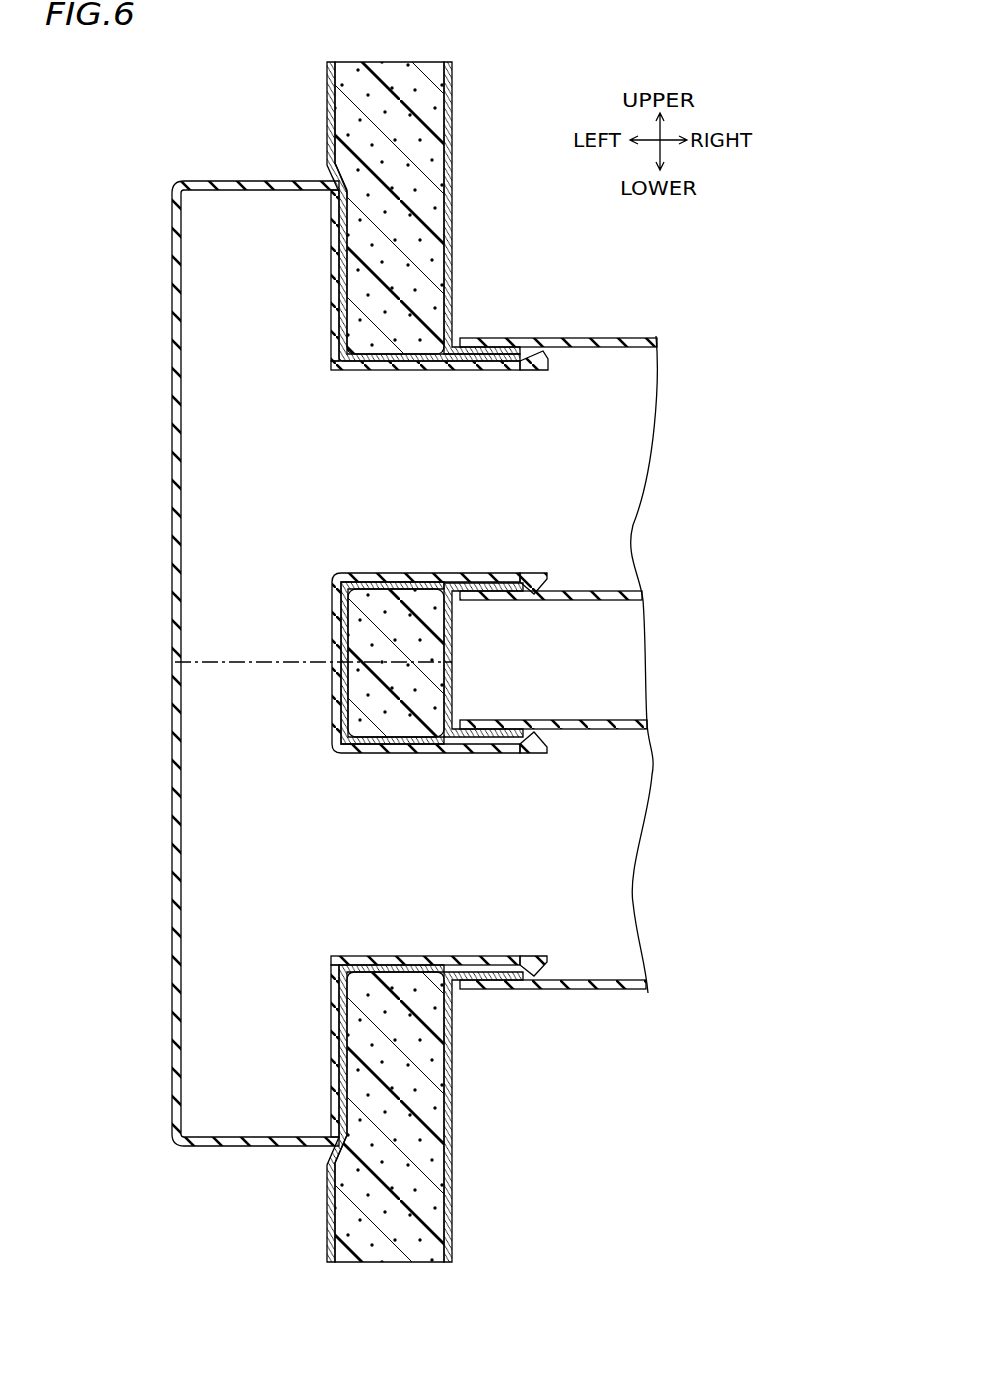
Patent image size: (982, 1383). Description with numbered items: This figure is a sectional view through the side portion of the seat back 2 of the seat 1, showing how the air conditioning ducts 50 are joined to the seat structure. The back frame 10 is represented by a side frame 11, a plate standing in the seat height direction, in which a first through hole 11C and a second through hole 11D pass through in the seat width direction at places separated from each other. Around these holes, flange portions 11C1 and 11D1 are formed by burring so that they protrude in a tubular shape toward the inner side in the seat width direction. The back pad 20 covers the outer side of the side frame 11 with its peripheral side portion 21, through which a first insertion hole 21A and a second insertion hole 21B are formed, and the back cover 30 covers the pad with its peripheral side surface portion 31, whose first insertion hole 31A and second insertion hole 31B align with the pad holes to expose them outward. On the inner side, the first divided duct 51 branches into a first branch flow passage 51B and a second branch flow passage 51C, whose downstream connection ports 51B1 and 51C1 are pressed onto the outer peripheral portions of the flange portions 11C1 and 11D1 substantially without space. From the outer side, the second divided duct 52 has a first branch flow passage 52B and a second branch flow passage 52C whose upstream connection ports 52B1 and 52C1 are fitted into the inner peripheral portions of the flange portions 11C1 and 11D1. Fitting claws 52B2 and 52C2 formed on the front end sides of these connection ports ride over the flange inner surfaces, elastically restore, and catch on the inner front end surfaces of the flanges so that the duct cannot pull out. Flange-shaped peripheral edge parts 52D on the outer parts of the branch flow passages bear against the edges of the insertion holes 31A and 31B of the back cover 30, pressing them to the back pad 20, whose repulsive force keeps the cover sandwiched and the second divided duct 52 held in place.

The seat 1 is at (378, 660).
The seat back 2 is at (145, 151).
The back frame 10 is at (495, 660).
The side frame 11 is at (464, 96).
The first through hole 11C is at (482, 472).
The flange portion 11C1 is at (506, 295).
The second through hole 11D is at (482, 854).
The flange portion 11D1 is at (512, 1029).
The back pad 20 is at (333, 662).
The peripheral side portion 21 is at (367, 99).
The first insertion hole 21A is at (368, 399).
The second insertion hole 21B is at (401, 926).
The back cover 30 is at (361, 662).
The peripheral side surface portion 31 is at (319, 122).
The first insertion hole 31A is at (294, 376).
The second insertion hole 31B is at (295, 951).
The duct 50 is at (579, 626).
The first divided duct 51 is at (646, 333).
The first branch flow passage 51B is at (604, 340).
The connection port 51B1 is at (506, 425).
The second branch flow passage 51C is at (608, 722).
The connection port 51C1 is at (506, 805).
The second divided duct 52 is at (163, 246).
The first branch flow passage 52B is at (461, 368).
The connection port 52B1 is at (506, 476).
The fitting claw 52B2 is at (534, 358).
The second branch flow passage 52C is at (465, 982).
The connection port 52C1 is at (506, 904).
The fitting claw 52C2 is at (538, 733).
The peripheral edge part 52D is at (331, 259).